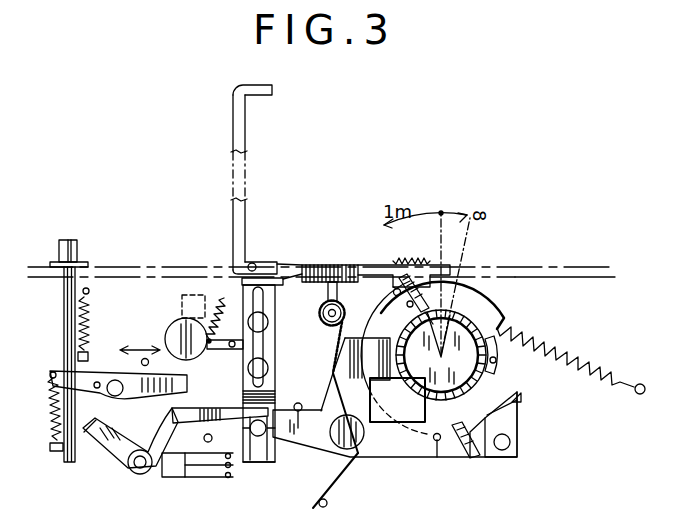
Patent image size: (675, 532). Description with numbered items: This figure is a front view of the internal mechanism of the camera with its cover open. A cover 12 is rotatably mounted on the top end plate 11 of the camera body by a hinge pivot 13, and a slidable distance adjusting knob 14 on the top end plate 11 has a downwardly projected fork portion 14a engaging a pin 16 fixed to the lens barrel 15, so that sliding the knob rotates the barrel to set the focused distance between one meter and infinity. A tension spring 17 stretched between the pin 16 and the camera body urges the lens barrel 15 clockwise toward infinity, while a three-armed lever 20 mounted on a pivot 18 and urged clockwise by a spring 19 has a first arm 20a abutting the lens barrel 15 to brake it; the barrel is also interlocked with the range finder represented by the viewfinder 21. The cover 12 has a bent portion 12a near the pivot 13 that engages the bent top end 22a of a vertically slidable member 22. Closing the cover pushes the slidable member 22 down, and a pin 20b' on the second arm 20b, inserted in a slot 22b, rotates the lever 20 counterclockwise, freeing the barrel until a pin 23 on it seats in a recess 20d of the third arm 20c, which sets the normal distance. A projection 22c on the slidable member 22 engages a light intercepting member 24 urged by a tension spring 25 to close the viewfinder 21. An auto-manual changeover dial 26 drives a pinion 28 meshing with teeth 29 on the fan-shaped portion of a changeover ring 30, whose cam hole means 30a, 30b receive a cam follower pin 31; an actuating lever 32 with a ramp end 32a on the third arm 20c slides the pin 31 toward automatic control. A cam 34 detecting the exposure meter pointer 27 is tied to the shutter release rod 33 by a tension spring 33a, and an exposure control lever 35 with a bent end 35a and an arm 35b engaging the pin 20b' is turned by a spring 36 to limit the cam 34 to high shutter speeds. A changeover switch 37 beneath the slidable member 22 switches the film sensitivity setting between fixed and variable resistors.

The top end plate 11 is at (590, 275).
The cover 12 is at (242, 118).
The bent portion 12a is at (270, 268).
The hinge pivot 13 is at (247, 262).
The distance adjusting knob 14 is at (404, 261).
The fork portion 14a is at (390, 298).
The lens barrel 15 is at (447, 287).
The pin 16 is at (393, 288).
The tension spring 17 is at (558, 352).
The pivot 18 is at (362, 448).
The spring 19 is at (330, 500).
The three-armed lever 20 is at (388, 456).
The first arm 20a is at (388, 376).
The second arm 20b is at (301, 446).
The pin 20b' is at (259, 465).
The third arm 20c is at (470, 460).
The recess 20d is at (437, 442).
The viewfinder 21 is at (190, 293).
The vertically slidable member 22 is at (280, 323).
The bent top end 22a is at (322, 263).
The slot 22b is at (236, 462).
The projection 22c is at (238, 349).
The pin 23 is at (472, 438).
The light intercepting member 24 is at (172, 338).
The tension spring 25 is at (223, 296).
The auto-manual changeover dial 26 is at (336, 283).
The pointer 27 is at (141, 362).
The pinion 28 is at (324, 306).
The teeth 29 is at (336, 338).
The auto-manual changeover ring 30 is at (499, 305).
The cam portion 30a is at (441, 355).
The cam hole portion 30b is at (498, 363).
The cam follower pin 31 is at (521, 399).
The actuating lever 32 is at (512, 446).
The ramp end 32a is at (518, 424).
The shutter release rod 33 is at (64, 306).
The tension spring 33a is at (52, 410).
The cam 34 is at (135, 393).
The exposure control lever 35 is at (127, 450).
The bent end 35a is at (88, 433).
The arm 35b is at (212, 403).
The spring 36 is at (162, 470).
The changeover switch 37 is at (197, 472).